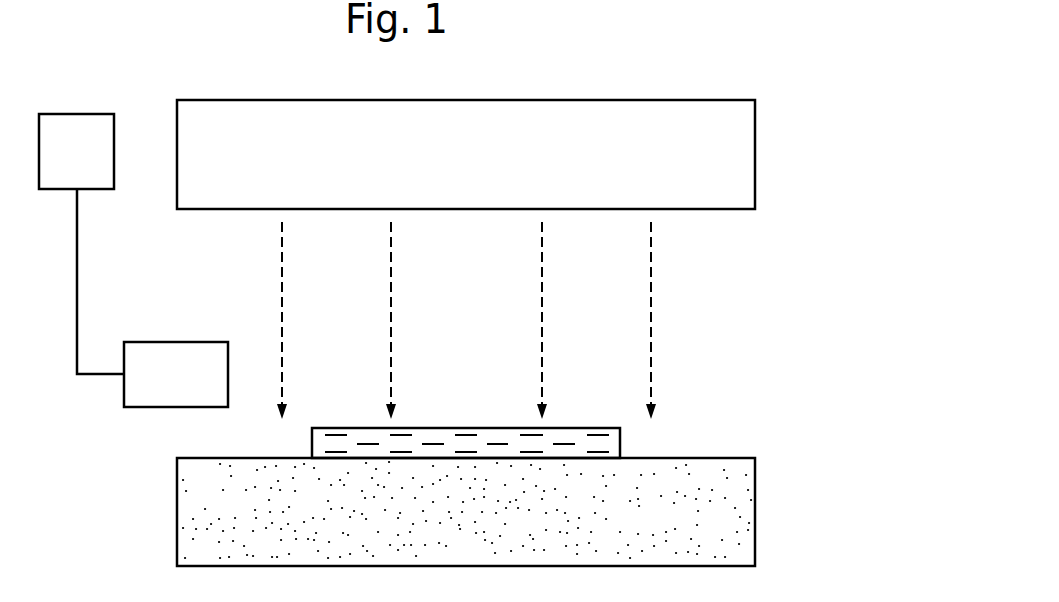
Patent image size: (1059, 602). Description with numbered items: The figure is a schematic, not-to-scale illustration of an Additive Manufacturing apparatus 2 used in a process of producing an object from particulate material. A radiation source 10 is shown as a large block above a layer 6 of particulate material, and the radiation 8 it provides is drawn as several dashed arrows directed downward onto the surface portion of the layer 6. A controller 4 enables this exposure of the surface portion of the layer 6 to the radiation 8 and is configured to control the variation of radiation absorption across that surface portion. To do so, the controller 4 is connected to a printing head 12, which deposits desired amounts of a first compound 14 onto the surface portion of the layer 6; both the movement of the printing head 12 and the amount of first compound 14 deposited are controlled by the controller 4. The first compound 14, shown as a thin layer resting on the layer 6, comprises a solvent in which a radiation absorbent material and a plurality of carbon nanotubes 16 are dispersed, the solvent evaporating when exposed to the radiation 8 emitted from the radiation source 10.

The Additive Manufacturing apparatus 2 is at (647, 73).
The controller 4 is at (69, 114).
The layer of particulate material 6 is at (707, 458).
The radiation 8 is at (280, 266).
The radiation source 10 is at (231, 100).
The printing head 12 is at (160, 342).
The first compound 14 is at (586, 428).
The carbon nanotubes 16 is at (460, 435).